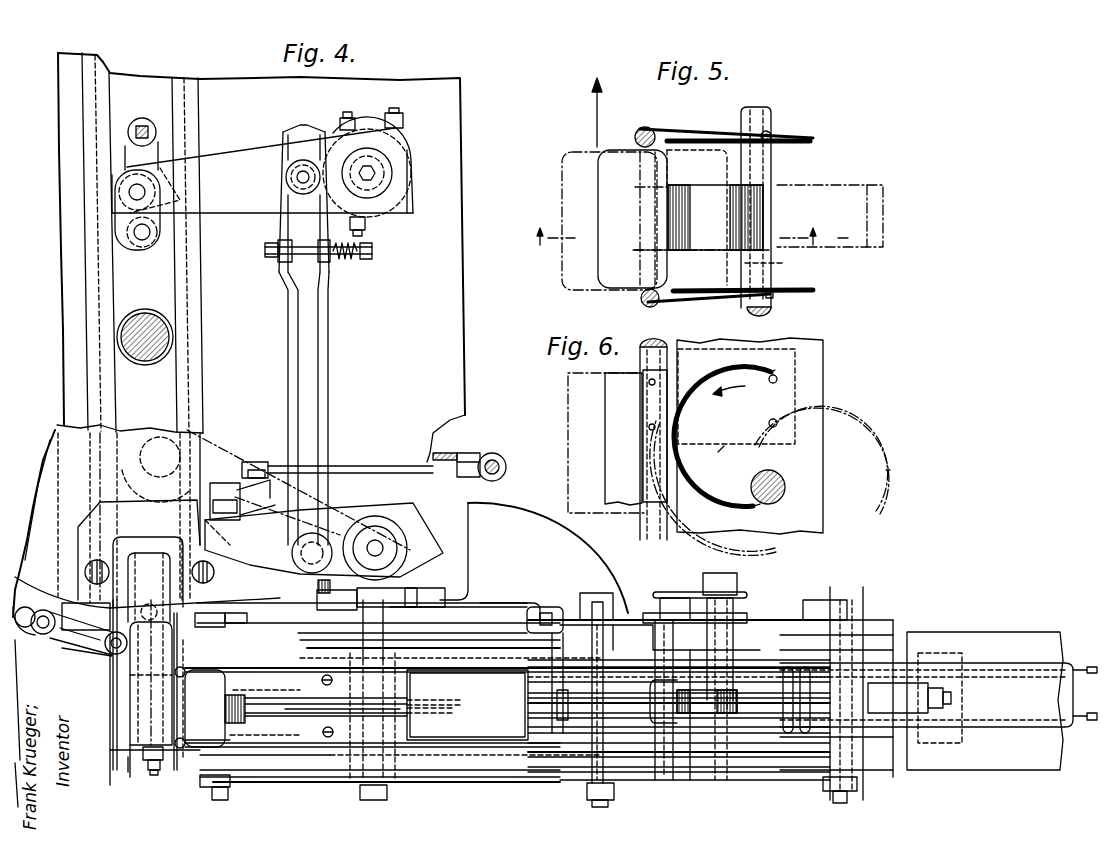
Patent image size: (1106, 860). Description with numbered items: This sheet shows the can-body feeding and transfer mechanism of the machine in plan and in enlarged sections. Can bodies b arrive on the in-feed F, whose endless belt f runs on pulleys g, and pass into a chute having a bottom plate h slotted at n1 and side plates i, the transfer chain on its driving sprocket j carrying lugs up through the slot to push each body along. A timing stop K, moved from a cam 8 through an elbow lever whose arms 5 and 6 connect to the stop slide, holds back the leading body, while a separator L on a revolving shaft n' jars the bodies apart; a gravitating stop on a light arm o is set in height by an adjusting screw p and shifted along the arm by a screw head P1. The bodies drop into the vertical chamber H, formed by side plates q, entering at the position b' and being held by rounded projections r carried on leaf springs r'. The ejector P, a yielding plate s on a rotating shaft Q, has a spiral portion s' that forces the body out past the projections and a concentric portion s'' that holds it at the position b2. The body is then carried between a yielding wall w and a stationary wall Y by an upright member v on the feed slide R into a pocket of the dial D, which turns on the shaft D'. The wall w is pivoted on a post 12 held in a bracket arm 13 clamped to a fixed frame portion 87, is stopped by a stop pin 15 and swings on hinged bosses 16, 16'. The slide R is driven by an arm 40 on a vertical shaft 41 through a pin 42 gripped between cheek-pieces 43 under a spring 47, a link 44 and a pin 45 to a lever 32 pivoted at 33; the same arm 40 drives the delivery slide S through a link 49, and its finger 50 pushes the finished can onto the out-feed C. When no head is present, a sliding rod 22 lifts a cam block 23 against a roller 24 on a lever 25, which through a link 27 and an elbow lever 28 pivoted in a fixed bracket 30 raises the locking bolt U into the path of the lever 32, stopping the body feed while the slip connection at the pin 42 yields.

In FIG. 4, the delivery slide S is at (128, 148).
In FIG. 4, the upright post or finger 50 is at (147, 123).
In FIG. 4, the connecting link 49 is at (118, 226).
In FIG. 4, the arm 40 is at (262, 170).
In FIG. 4, the pin 42 is at (290, 186).
In FIG. 4, the cheek-pieces 43 is at (300, 127).
In FIG. 4, the vertical shaft 41 is at (378, 160).
In FIG. 4, the spring 47 is at (345, 262).
In FIG. 4, the link 44 is at (327, 384).
In FIG. 4, the feed slide R is at (103, 708).
In FIG. 4, the dial shaft D' is at (145, 355).
In FIG. 4, the dial D is at (320, 335).
In FIG. 4, the elbow lever 28 is at (240, 470).
In FIG. 4, the link 27 is at (358, 468).
In FIG. 4, the lever 25 is at (452, 449).
In FIG. 4, the roller 24 is at (468, 478).
In FIG. 4, the cam block 23 is at (507, 467).
In FIG. 4, the sliding rod 22 is at (500, 479).
In FIG. 4, the pivot 33 is at (378, 548).
In FIG. 4, the cam 8 is at (347, 607).
In FIG. 4, the pin 45 is at (308, 566).
In FIG. 4, the lever 32 is at (243, 517).
In FIG. 4, the fixed bracket 30 is at (255, 516).
In FIG. 4, the out-feed C is at (140, 552).
In FIG. 4, the locking bolt U is at (213, 505).
In FIG. 4, the hinged boss 16' is at (155, 669).
In FIG. 4, the fixed frame portion 87 is at (48, 575).
In FIG. 4, the hinged boss 16 is at (71, 629).
In FIG. 4, the adjustable bracket arm 13 is at (80, 634).
In FIG. 4, the stop pin 15 is at (100, 652).
In FIG. 4, the vertical post 12 is at (107, 651).
In FIG. 4, the yielding wall w is at (152, 655).
In FIG. 4, the upright member v is at (143, 767).
In FIG. 4, the stationary wall Y is at (197, 623).
In FIG. 4, the leaf springs r' is at (220, 713).
In FIG. 5, the leaf springs r' is at (726, 214).
In FIG. 6, the leaf springs r' is at (730, 458).
In FIG. 4, the rounded projections r is at (188, 711).
In FIG. 5, the rounded projections r is at (634, 217).
In FIG. 6, the rounded projections r is at (643, 441).
In FIG. 4, the side plates q is at (197, 740).
In FIG. 5, the side plates q is at (695, 138).
In FIG. 6, the side plates q is at (810, 420).
In FIG. 4, the can body b is at (629, 705).
In FIG. 5, the can body b is at (632, 219).
In FIG. 6, the can body b is at (623, 439).
In FIG. 4, the ejector P is at (233, 713).
In FIG. 5, the ejector P is at (701, 217).
In FIG. 6, the ejector P is at (683, 431).
In FIG. 4, the bottom plate h is at (537, 730).
In FIG. 4, the slot n1 is at (326, 720).
In FIG. 4, the side plates i is at (470, 664).
In FIG. 4, the driving sprocket j is at (307, 711).
In FIG. 4, the vertical chamber H is at (213, 760).
In FIG. 5, the vertical chamber H is at (697, 217).
In FIG. 4, the rearwardly projecting arm 5 is at (520, 606).
In FIG. 4, the intercepting stop K is at (563, 736).
In FIG. 4, the pulleys g is at (577, 723).
In FIG. 4, the endless belt f is at (650, 761).
In FIG. 4, the revolving shaft n' is at (732, 671).
In FIG. 4, the separator L is at (732, 704).
In FIG. 4, the light arm o is at (805, 711).
In FIG. 4, the in-feed F is at (1036, 627).
In FIG. 4, the adjusting screw p is at (948, 699).
In FIG. 5, the outward body position b2 is at (562, 188).
In FIG. 6, the outward body position b2 is at (570, 453).
In FIG. 5, the downward arm 6 is at (682, 234).
In FIG. 5, the entering body position b' is at (772, 263).
In FIG. 5, the screw head P1 is at (885, 244).
In FIG. 6, the screw head P1 is at (890, 471).
In FIG. 5, the rotating shaft Q is at (770, 133).
In FIG. 6, the rotating shaft Q is at (782, 478).
In FIG. 6, the yielding plate s is at (722, 437).
In FIG. 6, the concentric portion s'' is at (730, 374).
In FIG. 6, the spiral portion s' is at (723, 513).